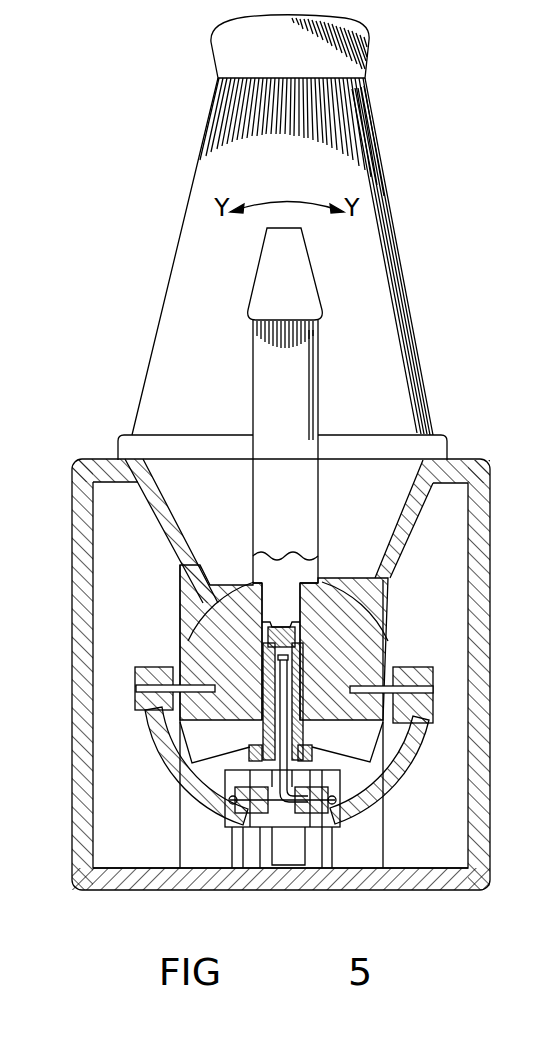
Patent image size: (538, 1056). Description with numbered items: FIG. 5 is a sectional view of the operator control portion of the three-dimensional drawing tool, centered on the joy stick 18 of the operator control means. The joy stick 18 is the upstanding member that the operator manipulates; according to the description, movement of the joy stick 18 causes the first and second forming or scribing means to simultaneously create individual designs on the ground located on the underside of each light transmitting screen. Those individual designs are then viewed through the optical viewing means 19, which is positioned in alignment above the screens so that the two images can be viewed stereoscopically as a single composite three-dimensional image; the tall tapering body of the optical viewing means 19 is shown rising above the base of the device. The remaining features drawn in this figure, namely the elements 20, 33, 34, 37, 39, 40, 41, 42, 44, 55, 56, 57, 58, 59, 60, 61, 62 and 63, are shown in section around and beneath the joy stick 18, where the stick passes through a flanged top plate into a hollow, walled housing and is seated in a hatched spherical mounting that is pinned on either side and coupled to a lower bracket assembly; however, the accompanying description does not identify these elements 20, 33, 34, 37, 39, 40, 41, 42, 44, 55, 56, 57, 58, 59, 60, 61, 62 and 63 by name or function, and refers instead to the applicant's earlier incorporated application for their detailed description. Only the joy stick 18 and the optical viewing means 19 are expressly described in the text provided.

The joy stick 18 is at (243, 356).
The optical viewing means 19 is at (188, 150).
The cap 20 is at (218, 43).
The base wall 33 is at (405, 893).
The housing 34 is at (472, 456).
The recess 37 is at (302, 556).
The stem surface 39 is at (318, 377).
The socket member 40 is at (362, 586).
The spherical socket ring 41 is at (360, 622).
The inclined flange wall 42 is at (162, 498).
The pivot pins 44 is at (135, 688).
The bracket end 55 is at (335, 802).
The bolt end 56 is at (230, 800).
The right bushing 57 is at (303, 737).
The left bushing 58 is at (263, 736).
The spring element 59 is at (312, 598).
The chamber 60 is at (281, 705).
The ball body 61 is at (242, 660).
The ball surface 62 is at (367, 652).
The pivot pin 63 is at (252, 757).